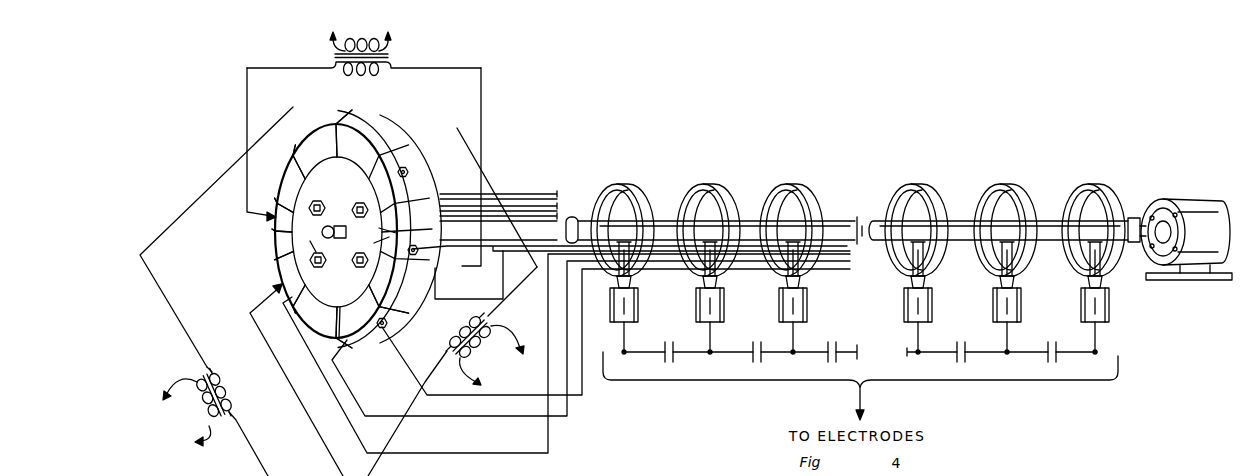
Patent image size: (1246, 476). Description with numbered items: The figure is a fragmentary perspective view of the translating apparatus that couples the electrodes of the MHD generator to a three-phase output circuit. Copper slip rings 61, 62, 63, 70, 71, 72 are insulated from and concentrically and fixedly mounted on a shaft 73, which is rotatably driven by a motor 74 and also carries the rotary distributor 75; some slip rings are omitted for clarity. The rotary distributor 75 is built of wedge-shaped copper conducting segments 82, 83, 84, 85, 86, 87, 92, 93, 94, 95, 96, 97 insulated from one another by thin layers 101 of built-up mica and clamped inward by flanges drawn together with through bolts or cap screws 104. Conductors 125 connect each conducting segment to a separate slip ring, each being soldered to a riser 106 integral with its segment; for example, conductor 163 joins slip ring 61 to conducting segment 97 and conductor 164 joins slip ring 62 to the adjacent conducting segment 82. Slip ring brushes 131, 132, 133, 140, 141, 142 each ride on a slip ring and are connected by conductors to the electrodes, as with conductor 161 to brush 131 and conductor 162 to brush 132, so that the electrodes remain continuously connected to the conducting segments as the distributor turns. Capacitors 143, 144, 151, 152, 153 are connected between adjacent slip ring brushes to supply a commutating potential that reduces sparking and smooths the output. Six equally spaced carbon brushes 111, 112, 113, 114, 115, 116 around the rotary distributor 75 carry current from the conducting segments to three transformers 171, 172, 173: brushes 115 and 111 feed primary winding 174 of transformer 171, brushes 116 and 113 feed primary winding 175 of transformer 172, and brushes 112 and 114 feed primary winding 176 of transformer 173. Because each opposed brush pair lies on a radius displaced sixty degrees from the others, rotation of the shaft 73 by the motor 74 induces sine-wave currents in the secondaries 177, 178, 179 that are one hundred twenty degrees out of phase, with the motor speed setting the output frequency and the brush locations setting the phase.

The slip ring 61 is at (1094, 184).
The slip ring 62 is at (1008, 184).
The slip ring 63 is at (916, 184).
The slip ring 70 is at (796, 185).
The slip ring 71 is at (712, 185).
The slip ring 72 is at (626, 186).
The shaft 73 is at (1133, 215).
The motor 74 is at (1185, 198).
The rotary distributor 75 is at (138, 300).
The conducting segment 82 is at (338, 246).
The conducting segment 83 is at (376, 226).
The conducting segment 84 is at (385, 184).
The conducting segment 85 is at (372, 144).
The conducting segment 86 is at (322, 144).
The conducting segment 87 is at (286, 178).
The conducting segment 92 is at (284, 205).
The conducting segment 93 is at (278, 255).
The conducting segment 94 is at (280, 277).
The conducting segment 95 is at (322, 316).
The conducting segment 96 is at (372, 316).
The conducting segment 97 is at (392, 272).
The layers of built-up mica 101 is at (368, 245).
The through bolts or cap screws 104 is at (305, 238).
The risers 106 is at (439, 187).
The brush 111 is at (382, 332).
The brush 112 is at (411, 243).
The brush 113 is at (410, 171).
The brush 114 is at (251, 152).
The brush 115 is at (293, 107).
The brush 116 is at (296, 380).
The conductors 125 is at (545, 163).
The slip ring brush 131 is at (1109, 301).
The slip ring brush 132 is at (1021, 301).
The slip ring brush 133 is at (932, 301).
The slip ring brush 140 is at (807, 301).
The slip ring brush 141 is at (724, 301).
The slip ring brush 142 is at (638, 301).
The capacitor 143 is at (1047, 346).
The capacitor 144 is at (957, 346).
The capacitor 151 is at (827, 343).
The capacitor 152 is at (752, 343).
The capacitor 153 is at (666, 343).
The conductor 161 is at (1098, 352).
The conductor 162 is at (1009, 358).
The conductor 163 is at (498, 262).
The conductor 164 is at (451, 250).
The transformer 171 is at (194, 380).
The transformer 172 is at (500, 328).
The transformer 173 is at (398, 53).
The primary winding 174 is at (229, 393).
The primary winding 175 is at (469, 331).
The primary winding 176 is at (376, 72).
The secondary winding 177 is at (190, 413).
The secondary winding 178 is at (487, 366).
The secondary winding 179 is at (337, 41).